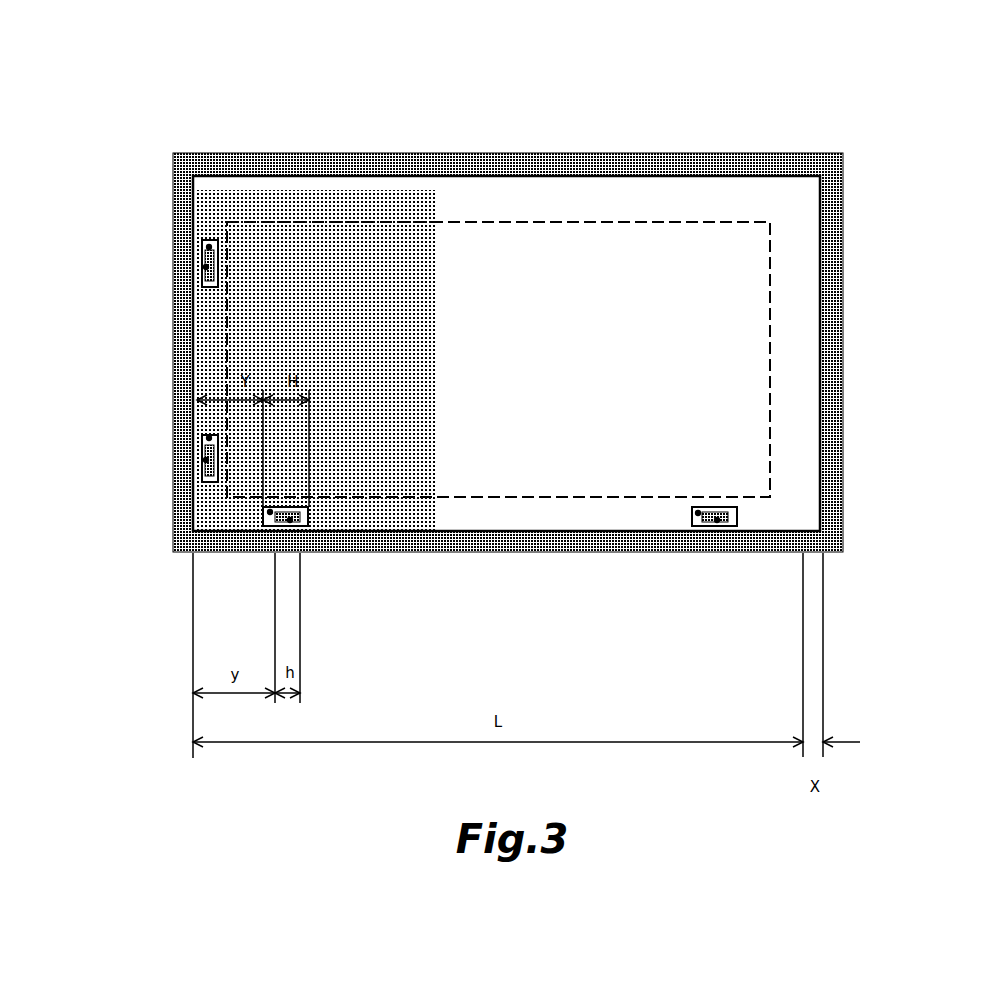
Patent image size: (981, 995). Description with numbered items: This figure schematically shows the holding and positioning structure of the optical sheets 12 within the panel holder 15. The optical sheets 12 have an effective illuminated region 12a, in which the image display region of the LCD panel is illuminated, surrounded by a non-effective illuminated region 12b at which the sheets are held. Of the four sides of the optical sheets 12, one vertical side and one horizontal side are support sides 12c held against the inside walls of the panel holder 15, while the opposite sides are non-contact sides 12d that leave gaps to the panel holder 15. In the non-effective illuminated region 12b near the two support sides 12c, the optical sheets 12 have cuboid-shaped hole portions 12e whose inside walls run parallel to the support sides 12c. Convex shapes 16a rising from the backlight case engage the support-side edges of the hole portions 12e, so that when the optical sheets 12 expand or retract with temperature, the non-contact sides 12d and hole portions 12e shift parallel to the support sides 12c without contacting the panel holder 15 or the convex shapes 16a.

The optical sheets 12 is at (803, 195).
The effective illuminated region 12a is at (473, 258).
The non-effective illuminated region 12b is at (590, 202).
The support sides 12c is at (193, 357).
The non-contact sides 12d is at (507, 192).
The hole portions 12e is at (207, 248).
The panel holder 15 is at (240, 165).
The convex shapes 16a is at (203, 267).